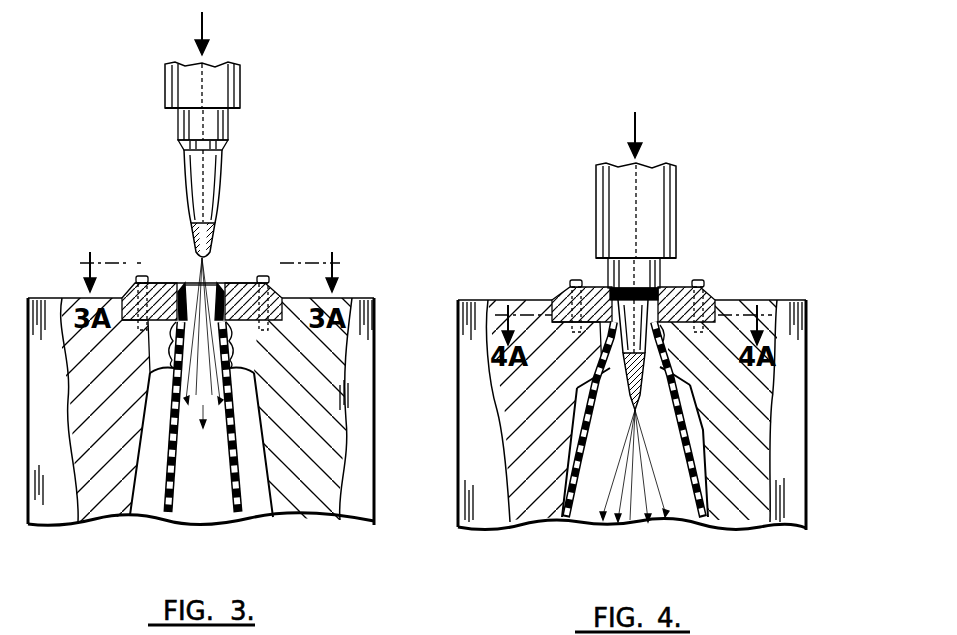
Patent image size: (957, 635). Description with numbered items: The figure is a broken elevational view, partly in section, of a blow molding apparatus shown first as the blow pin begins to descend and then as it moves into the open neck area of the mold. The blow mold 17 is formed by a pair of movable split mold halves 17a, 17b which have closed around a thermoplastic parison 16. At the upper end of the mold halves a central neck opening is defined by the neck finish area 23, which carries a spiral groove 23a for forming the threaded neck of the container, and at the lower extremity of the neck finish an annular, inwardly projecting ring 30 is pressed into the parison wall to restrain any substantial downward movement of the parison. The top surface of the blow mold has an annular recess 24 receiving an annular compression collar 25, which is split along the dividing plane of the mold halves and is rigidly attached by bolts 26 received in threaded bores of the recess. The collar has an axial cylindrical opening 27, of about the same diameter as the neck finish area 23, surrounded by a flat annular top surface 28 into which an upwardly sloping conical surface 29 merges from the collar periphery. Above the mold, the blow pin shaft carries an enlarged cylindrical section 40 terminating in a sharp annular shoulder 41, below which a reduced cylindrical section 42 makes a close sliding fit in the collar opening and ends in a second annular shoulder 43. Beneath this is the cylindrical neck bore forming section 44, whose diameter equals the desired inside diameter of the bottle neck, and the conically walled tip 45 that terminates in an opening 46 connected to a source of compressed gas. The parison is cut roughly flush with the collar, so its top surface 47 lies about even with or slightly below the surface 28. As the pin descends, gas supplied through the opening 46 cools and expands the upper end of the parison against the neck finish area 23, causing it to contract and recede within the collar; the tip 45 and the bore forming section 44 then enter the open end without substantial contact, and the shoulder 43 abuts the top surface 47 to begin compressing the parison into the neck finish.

In FIG. 3, the parison 16 is at (238, 490).
In FIG. 4, the parison 16 is at (575, 481).
In FIG. 3, the blow mold 17 is at (247, 532).
In FIG. 4, the blow mold 17 is at (574, 533).
In FIG. 3, the mold half 17a is at (55, 515).
In FIG. 4, the mold half 17a is at (482, 476).
In FIG. 3, the mold half 17b is at (362, 494).
In FIG. 4, the mold half 17b is at (826, 555).
In FIG. 3, the neck finish area 23 is at (166, 347).
In FIG. 4, the neck finish area 23 is at (668, 343).
In FIG. 3, the spiral groove 23a is at (298, 342).
In FIG. 3, the annular recess 24 is at (130, 323).
In FIG. 4, the annular recess 24 is at (558, 332).
In FIG. 3, the annular compression collar 25 is at (263, 263).
In FIG. 4, the annular compression collar 25 is at (697, 268).
In FIG. 3, the bolts 26 is at (139, 283).
In FIG. 4, the bolts 26 is at (573, 288).
In FIG. 3, the axial cylindrical opening 27 is at (216, 283).
In FIG. 3, the flat annular top surface 28 is at (173, 288).
In FIG. 3, the conical surface 29 is at (272, 290).
In FIG. 3, the annular inwardly projecting ring 30 is at (150, 373).
In FIG. 4, the annular inwardly projecting ring 30 is at (590, 375).
In FIG. 3, the enlarged cylindrical section 40 is at (218, 92).
In FIG. 4, the enlarged cylindrical section 40 is at (645, 190).
In FIG. 3, the annular shoulder 41 is at (240, 110).
In FIG. 4, the annular shoulder 41 is at (662, 268).
In FIG. 3, the second reduced cylindrical section 42 is at (197, 125).
In FIG. 4, the second reduced cylindrical section 42 is at (625, 275).
In FIG. 3, the second annular shoulder 43 is at (182, 143).
In FIG. 4, the second annular shoulder 43 is at (634, 309).
In FIG. 3, the neck bore forming section 44 is at (205, 173).
In FIG. 4, the neck bore forming section 44 is at (616, 344).
In FIG. 3, the tip 45 is at (202, 204).
In FIG. 4, the tip 45 is at (656, 378).
In FIG. 3, the opening 46 is at (214, 258).
In FIG. 4, the opening 46 is at (650, 417).
In FIG. 3, the top surface of the parison 47 is at (227, 286).